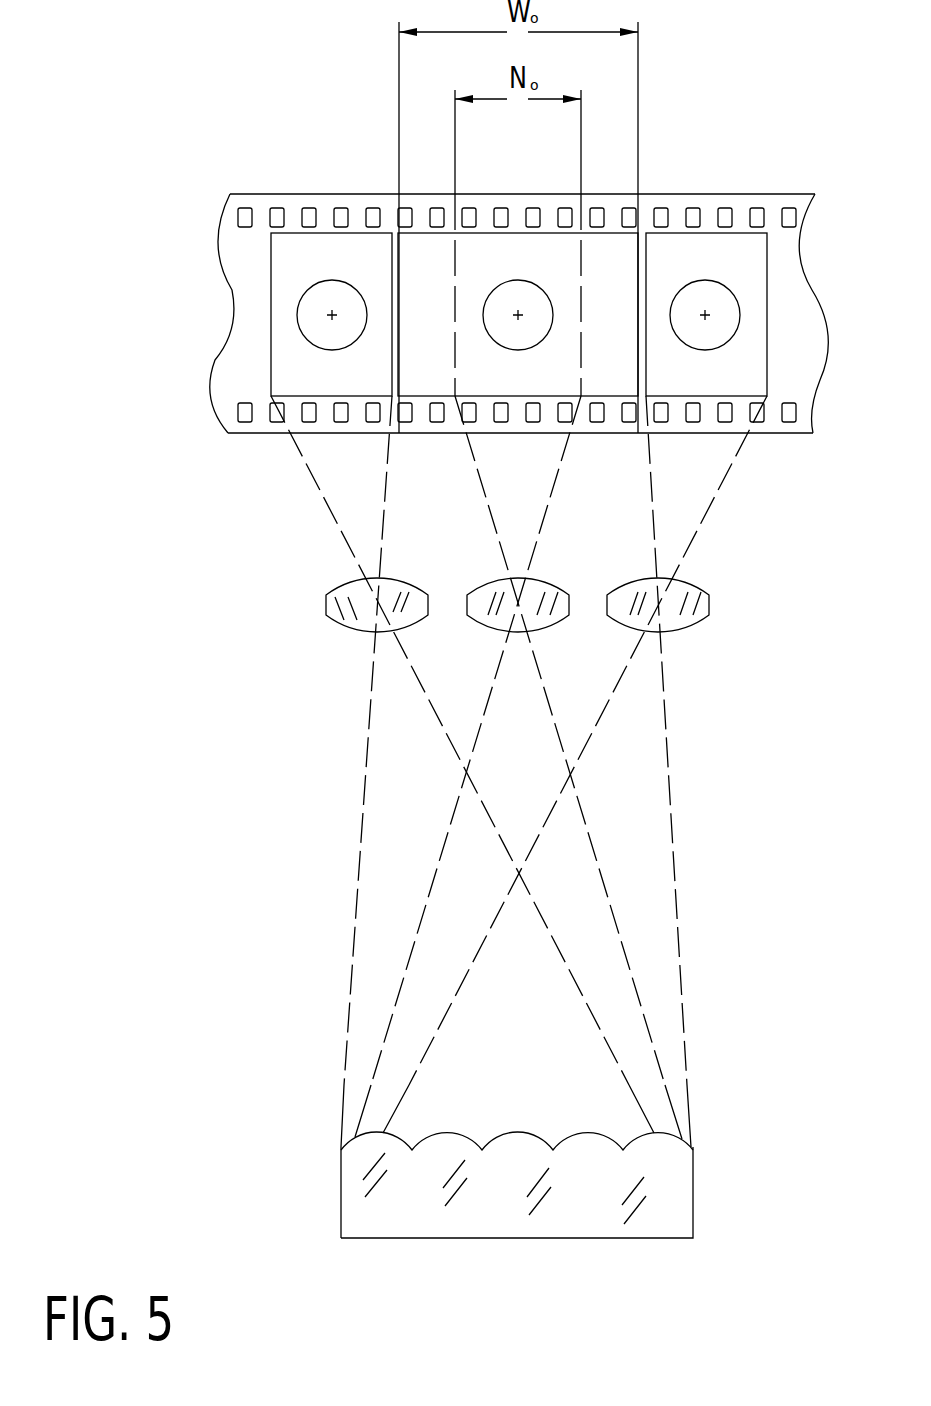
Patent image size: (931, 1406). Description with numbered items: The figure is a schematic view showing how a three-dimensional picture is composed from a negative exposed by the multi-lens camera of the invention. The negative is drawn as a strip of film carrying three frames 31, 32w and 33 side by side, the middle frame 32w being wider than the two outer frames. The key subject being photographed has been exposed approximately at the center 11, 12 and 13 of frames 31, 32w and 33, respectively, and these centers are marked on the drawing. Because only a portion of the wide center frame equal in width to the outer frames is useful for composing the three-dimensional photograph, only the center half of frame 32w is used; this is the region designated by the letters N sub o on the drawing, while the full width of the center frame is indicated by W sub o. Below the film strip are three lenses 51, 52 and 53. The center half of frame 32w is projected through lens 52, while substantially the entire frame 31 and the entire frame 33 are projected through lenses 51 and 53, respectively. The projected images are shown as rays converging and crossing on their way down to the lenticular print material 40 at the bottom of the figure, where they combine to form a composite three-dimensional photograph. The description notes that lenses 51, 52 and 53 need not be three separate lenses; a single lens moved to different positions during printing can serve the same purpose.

The center of frame 11 is at (318, 340).
The center of frame 12 is at (535, 295).
The center of frame 13 is at (727, 325).
The frame 31 is at (327, 382).
The center frame 32w is at (510, 385).
The frame 33 is at (673, 380).
The lens 51 is at (352, 612).
The lens 52 is at (543, 602).
The lens 53 is at (673, 612).
The lenticular print material 40 is at (678, 1195).